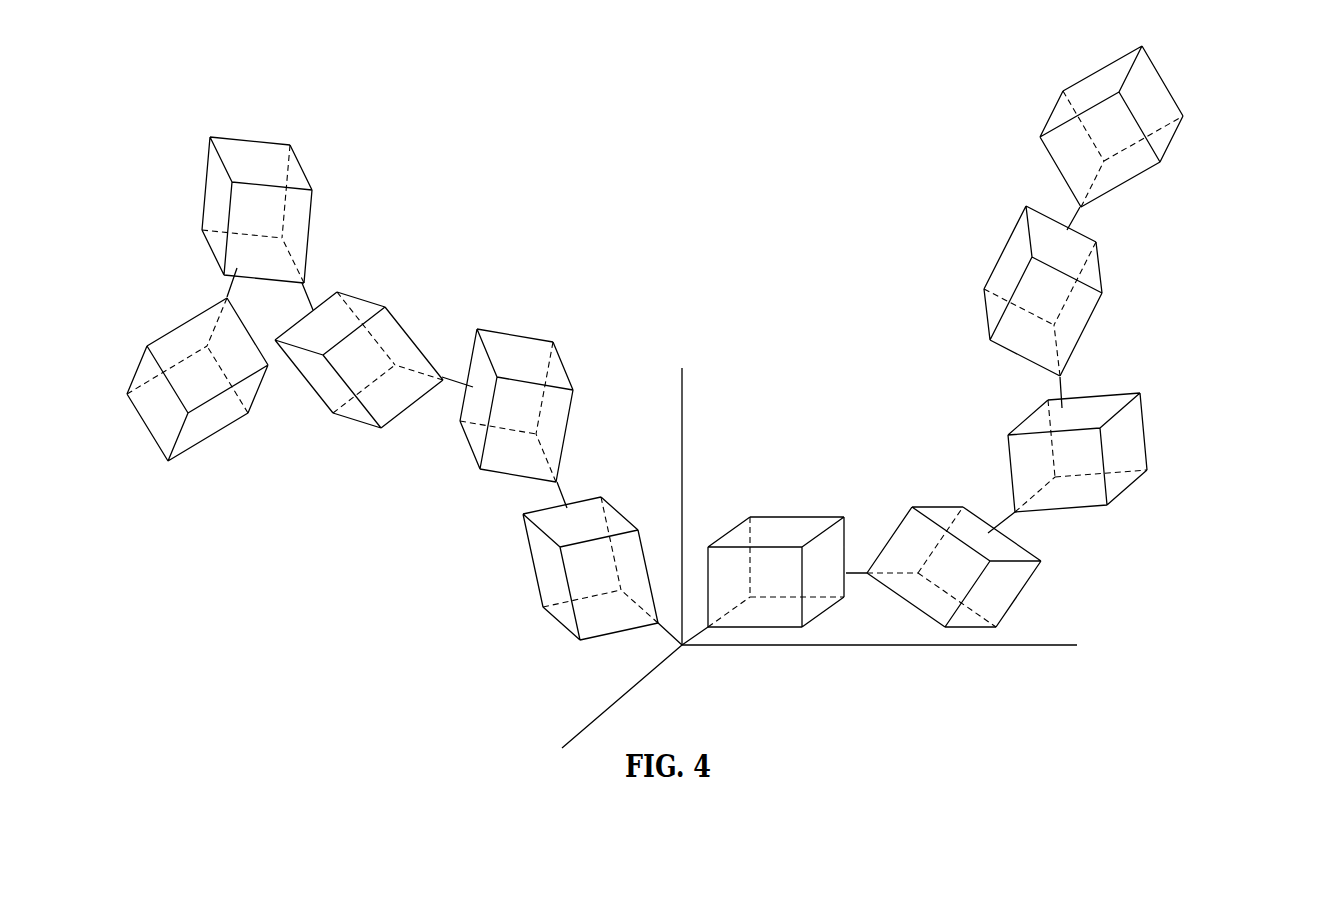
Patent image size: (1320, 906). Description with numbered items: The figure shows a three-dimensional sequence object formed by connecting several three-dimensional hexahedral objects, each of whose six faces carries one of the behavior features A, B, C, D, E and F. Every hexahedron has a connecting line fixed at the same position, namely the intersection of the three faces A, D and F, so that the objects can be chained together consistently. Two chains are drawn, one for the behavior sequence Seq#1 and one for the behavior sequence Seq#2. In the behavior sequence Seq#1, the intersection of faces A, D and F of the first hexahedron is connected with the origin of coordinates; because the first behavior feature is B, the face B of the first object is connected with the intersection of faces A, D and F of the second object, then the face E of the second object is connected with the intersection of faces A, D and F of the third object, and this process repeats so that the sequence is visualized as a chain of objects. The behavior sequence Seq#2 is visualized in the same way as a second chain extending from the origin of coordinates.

The behavior feature A is at (654, 366).
The behavior feature B is at (654, 344).
The behavior feature C is at (655, 335).
The behavior feature D is at (655, 377).
The behavior feature E is at (655, 336).
The behavior feature F is at (654, 384).
The behavior sequence Seq# 1 is at (1172, 576).
The behavior sequence Seq# 2 is at (356, 516).